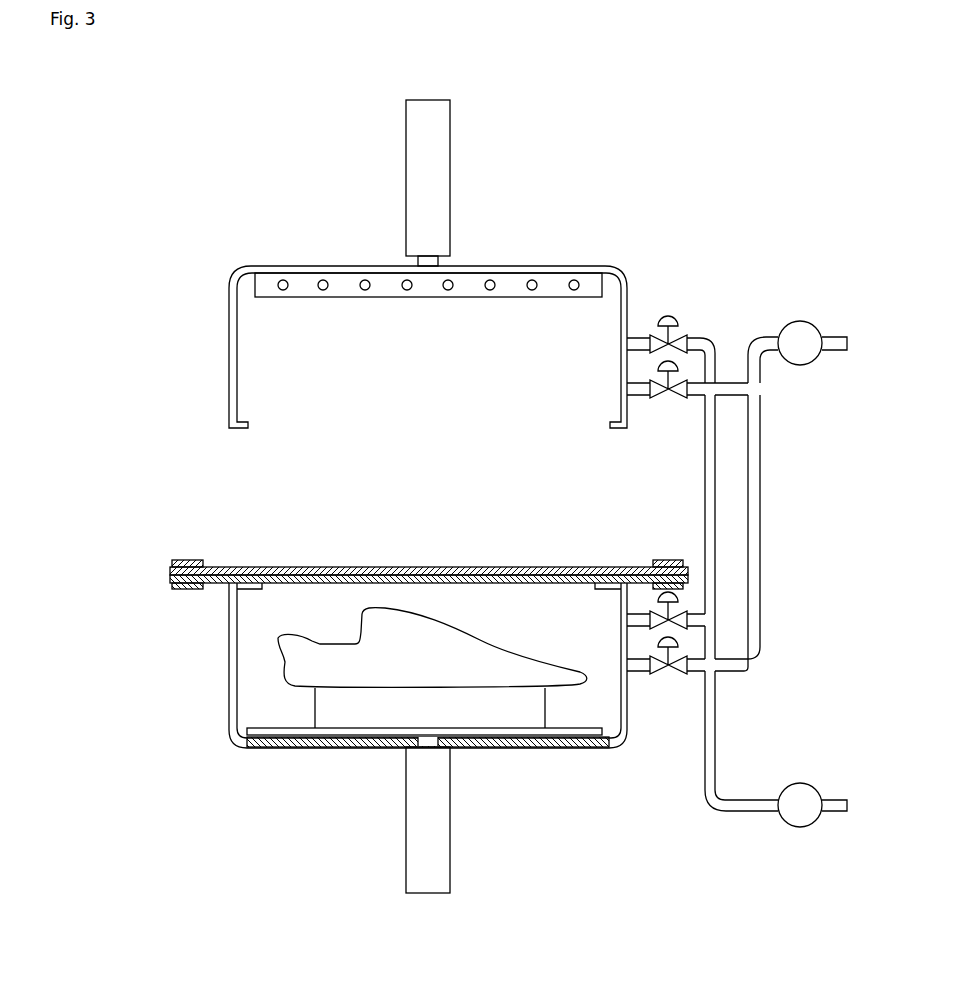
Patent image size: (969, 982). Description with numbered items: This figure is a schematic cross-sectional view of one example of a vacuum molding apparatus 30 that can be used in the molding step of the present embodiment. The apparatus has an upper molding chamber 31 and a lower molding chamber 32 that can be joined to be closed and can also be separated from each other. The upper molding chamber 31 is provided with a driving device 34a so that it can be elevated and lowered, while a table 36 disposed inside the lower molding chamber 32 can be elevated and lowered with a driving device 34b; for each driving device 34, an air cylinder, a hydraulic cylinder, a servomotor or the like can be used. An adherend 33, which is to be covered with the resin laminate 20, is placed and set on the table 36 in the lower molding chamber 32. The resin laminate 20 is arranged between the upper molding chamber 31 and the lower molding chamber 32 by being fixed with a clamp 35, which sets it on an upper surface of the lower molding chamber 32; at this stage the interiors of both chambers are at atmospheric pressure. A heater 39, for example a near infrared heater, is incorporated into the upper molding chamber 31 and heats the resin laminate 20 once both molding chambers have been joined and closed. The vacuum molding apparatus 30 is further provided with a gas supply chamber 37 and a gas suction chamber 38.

The resin laminate 20 is at (170, 573).
The vacuum molding apparatus 30 is at (664, 153).
The upper molding chamber 31 is at (217, 310).
The lower molding chamber 32 is at (215, 726).
The adherend 33 is at (298, 664).
The driving device 34 is at (514, 528).
The driving device 34a is at (445, 178).
The driving device 34b is at (438, 848).
The clamp 35 is at (187, 560).
The table 36 is at (272, 746).
The gas supply chamber 37 is at (812, 334).
The gas suction chamber 38 is at (812, 813).
The heater 39 is at (577, 271).